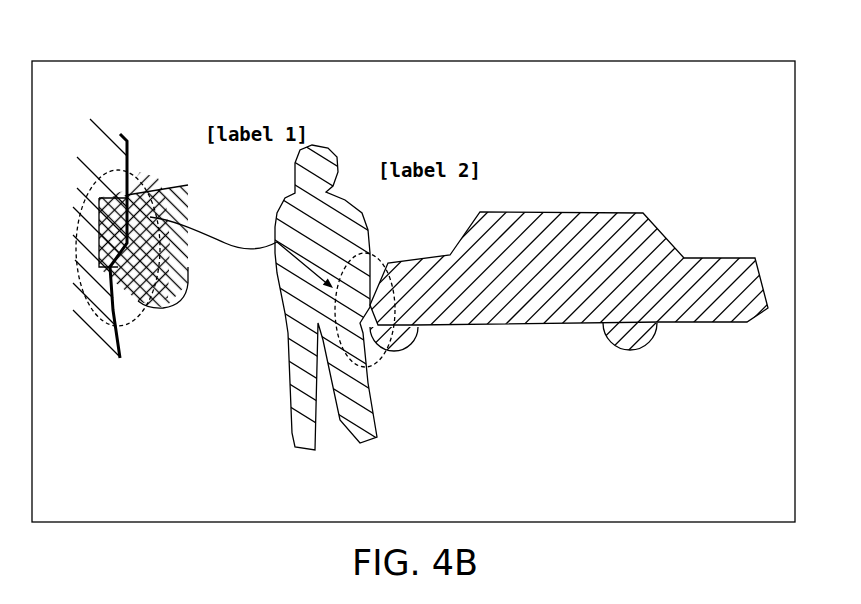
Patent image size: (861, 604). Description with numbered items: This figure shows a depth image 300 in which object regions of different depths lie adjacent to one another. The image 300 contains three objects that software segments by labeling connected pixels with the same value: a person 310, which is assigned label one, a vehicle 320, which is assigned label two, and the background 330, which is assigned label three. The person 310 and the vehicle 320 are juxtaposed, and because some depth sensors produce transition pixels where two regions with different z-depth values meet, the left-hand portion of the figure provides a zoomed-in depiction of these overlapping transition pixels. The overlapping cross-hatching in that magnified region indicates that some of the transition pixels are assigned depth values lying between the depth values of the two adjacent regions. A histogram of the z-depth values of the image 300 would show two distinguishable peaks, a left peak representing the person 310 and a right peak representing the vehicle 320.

The image 300 is at (156, 46).
The person 310 is at (127, 142).
The vehicle 320 is at (163, 305).
The background 330 is at (572, 138).